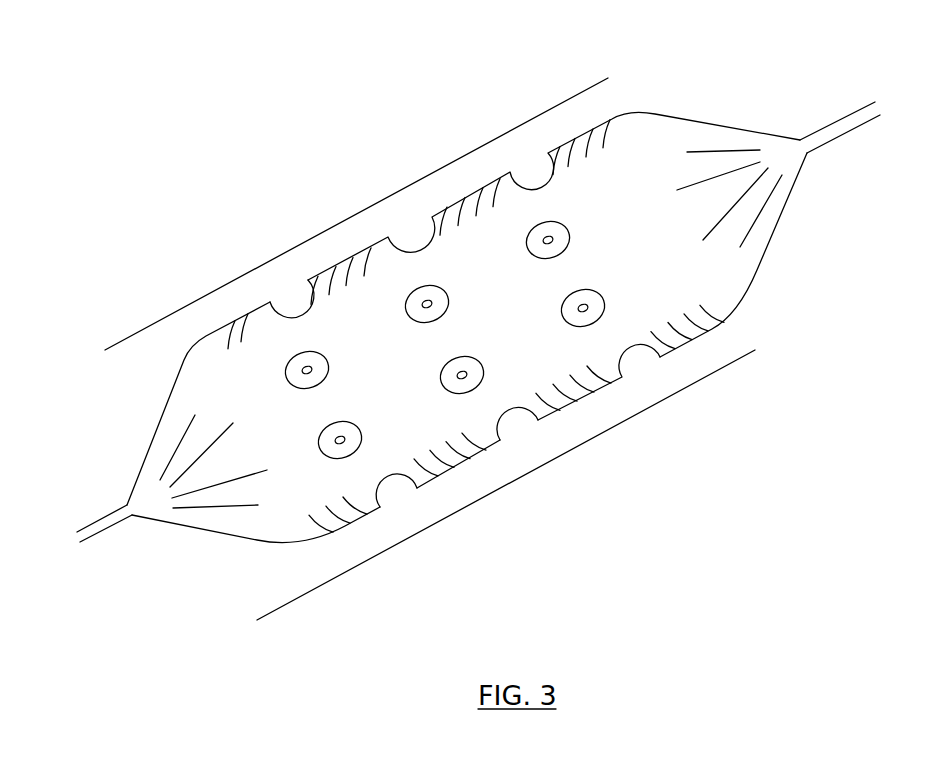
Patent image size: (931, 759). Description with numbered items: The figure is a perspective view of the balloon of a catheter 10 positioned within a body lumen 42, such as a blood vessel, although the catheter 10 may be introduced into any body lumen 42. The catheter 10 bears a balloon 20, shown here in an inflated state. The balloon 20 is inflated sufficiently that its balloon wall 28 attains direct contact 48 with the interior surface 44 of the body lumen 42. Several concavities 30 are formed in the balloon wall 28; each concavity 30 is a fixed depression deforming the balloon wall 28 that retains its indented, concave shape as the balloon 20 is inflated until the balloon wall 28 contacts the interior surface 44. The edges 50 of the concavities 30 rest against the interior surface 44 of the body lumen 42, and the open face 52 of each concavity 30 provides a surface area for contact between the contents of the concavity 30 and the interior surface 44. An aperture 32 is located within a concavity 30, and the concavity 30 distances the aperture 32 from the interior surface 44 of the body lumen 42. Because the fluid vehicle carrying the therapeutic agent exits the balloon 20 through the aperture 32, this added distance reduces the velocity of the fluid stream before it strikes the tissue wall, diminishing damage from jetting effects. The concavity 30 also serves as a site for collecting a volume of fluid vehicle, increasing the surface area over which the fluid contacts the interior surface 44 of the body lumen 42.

The catheter 10 is at (93, 523).
The balloon 20 is at (640, 138).
The balloon wall 28 is at (257, 540).
The concavity 30 is at (288, 293).
The aperture 32 is at (583, 308).
The body lumen 42 is at (189, 614).
The interior surface 44 is at (132, 348).
The direct contact 48 is at (375, 530).
The edges 50 is at (418, 488).
The open face 52 is at (520, 430).